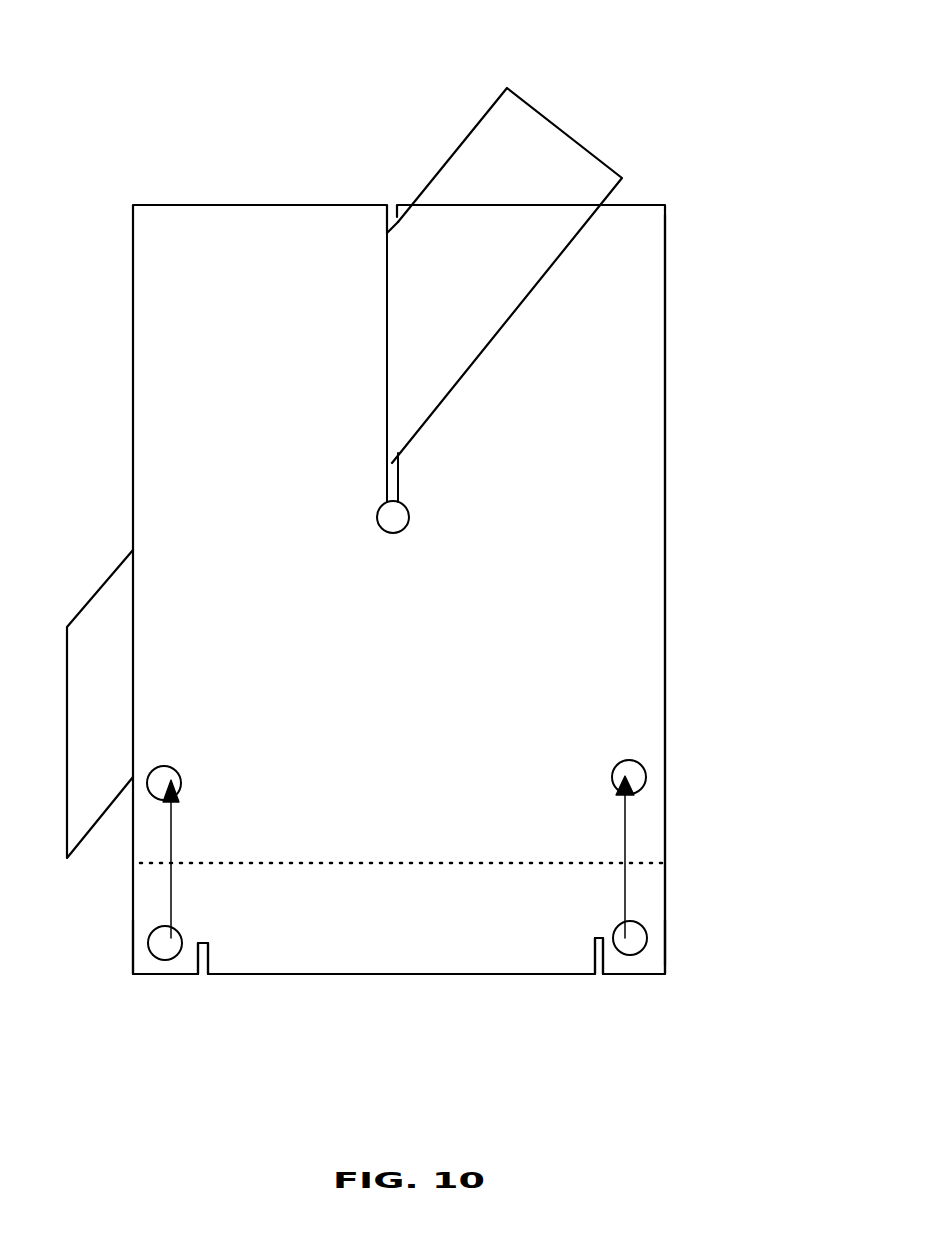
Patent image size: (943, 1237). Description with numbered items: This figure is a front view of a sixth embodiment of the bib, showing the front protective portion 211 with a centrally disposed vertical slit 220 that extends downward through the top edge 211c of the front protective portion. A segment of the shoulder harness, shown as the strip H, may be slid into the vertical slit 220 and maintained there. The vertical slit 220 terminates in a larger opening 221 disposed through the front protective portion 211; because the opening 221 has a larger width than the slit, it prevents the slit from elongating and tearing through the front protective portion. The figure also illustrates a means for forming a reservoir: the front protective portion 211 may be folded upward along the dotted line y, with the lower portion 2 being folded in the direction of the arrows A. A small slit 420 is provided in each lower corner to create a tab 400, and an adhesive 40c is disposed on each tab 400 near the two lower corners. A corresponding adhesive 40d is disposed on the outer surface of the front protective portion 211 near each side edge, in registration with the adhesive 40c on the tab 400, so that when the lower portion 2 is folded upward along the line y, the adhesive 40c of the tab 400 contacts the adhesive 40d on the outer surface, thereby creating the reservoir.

The lower portion 2 is at (389, 952).
The front protective portion 211 is at (588, 523).
The top edge 211c is at (225, 205).
The vertical slit 220 is at (392, 215).
The opening 221 is at (393, 517).
The folded flap tab H is at (503, 160).
The adhesive 40c is at (165, 949).
The adhesive 40d is at (155, 788).
The arrows A is at (172, 845).
The dotted line y is at (348, 863).
The tab 400 is at (152, 968).
The small slit 420 is at (203, 960).